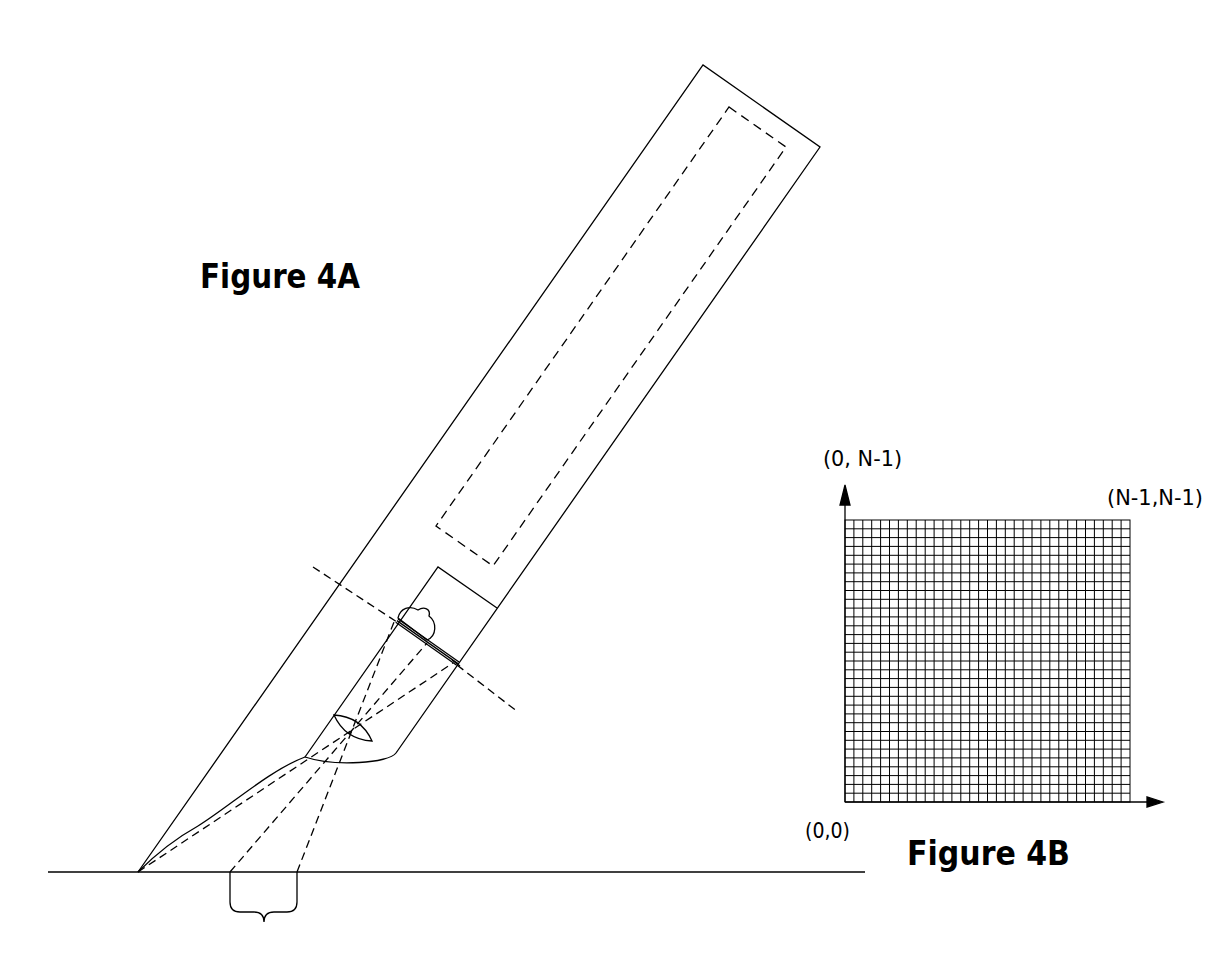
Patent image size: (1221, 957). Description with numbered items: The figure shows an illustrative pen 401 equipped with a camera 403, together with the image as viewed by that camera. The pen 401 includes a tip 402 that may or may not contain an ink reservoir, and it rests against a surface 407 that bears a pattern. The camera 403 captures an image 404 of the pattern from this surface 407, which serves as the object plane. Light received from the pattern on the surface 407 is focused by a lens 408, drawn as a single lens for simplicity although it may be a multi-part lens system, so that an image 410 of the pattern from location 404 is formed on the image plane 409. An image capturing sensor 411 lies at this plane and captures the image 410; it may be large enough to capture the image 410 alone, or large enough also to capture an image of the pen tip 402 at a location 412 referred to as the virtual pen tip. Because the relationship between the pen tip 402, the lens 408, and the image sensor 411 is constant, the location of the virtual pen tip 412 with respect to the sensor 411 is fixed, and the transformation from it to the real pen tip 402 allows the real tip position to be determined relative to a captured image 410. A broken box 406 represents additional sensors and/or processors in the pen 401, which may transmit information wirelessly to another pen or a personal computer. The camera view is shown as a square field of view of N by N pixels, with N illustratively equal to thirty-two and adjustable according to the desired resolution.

The pen 401 is at (303, 670).
The tip 402 is at (136, 866).
The camera 403 is at (443, 593).
The image 404 is at (263, 914).
The broken box 406 is at (610, 338).
The surface 407 is at (490, 872).
The lens 408 is at (378, 748).
The image plane 409 is at (518, 712).
The image 410 is at (430, 612).
The image capturing sensor 411 is at (437, 643).
The virtual pen tip location 412 is at (455, 665).